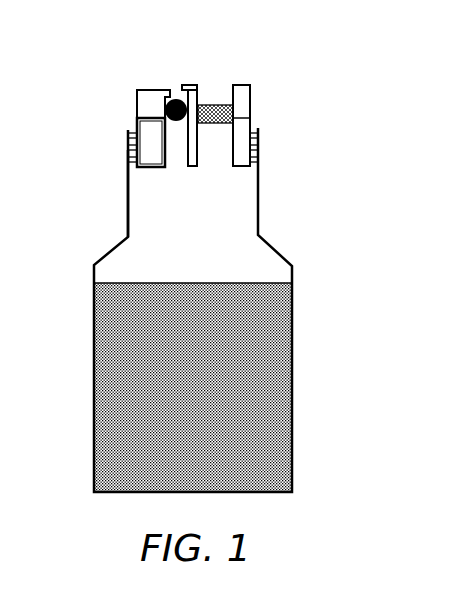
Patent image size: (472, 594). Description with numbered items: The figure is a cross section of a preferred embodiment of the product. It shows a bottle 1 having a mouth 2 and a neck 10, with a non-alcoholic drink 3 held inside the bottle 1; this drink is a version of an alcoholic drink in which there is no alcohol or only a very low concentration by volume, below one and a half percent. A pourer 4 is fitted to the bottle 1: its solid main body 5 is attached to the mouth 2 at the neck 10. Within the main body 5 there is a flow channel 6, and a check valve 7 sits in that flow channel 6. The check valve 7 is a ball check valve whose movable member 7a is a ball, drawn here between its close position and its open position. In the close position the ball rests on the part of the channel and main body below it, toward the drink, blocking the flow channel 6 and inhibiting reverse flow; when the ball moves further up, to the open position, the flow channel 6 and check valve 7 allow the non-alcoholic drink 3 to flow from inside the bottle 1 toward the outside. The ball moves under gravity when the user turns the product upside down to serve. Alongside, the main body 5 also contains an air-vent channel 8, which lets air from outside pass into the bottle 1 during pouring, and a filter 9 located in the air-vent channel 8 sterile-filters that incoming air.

The bottle 1 is at (280, 250).
The mouth 2 is at (128, 150).
The non-alcoholic drink 3 is at (292, 333).
The pourer 4 is at (133, 107).
The solid main body 5 is at (137, 125).
The flow channel 6 is at (162, 157).
The check valve 7 is at (158, 112).
The movable member 7a is at (188, 89).
The air-vent channel 8 is at (238, 132).
The filter 9 is at (213, 105).
The neck 10 is at (127, 215).